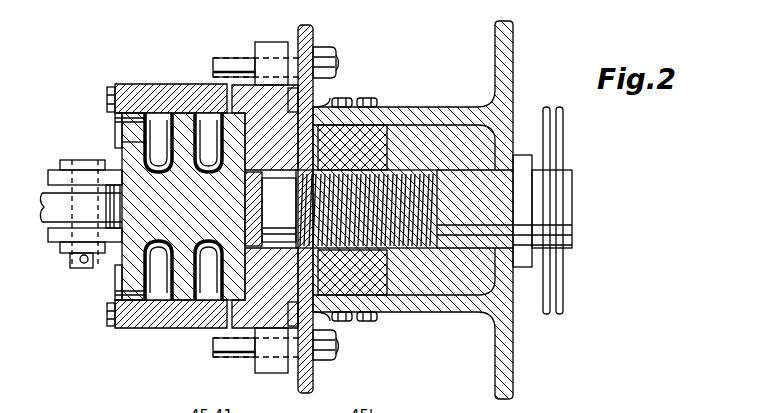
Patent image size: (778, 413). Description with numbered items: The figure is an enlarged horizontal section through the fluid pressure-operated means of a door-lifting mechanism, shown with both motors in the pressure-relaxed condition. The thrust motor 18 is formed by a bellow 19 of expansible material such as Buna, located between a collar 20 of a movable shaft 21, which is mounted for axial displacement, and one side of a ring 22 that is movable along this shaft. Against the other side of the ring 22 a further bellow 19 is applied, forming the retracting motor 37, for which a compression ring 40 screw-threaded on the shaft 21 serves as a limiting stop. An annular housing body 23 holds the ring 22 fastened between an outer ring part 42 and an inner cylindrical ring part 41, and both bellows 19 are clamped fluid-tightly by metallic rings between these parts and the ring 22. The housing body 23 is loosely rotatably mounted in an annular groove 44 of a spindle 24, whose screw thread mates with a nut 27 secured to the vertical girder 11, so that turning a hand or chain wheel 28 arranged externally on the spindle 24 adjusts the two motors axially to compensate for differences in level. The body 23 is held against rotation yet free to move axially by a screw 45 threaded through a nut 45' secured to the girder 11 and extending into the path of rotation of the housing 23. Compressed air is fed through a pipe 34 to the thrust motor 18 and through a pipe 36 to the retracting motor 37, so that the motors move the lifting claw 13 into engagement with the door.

The vertical girder 11 is at (486, 52).
The lifting claw 13 is at (53, 210).
The thrust motor 18 is at (122, 123).
The bellow 19 is at (147, 142).
The collar 20 is at (128, 272).
The movable shaft 21 is at (243, 200).
The ring 22 is at (182, 101).
The annular housing body 23 is at (300, 135).
The spindle 24 is at (425, 245).
The nut 27 is at (376, 144).
The chain wheel 28 is at (547, 112).
The pipe 34 is at (160, 86).
The pipe 36 is at (208, 85).
The retracting motor 37 is at (192, 285).
The compression ring 40 is at (228, 285).
The inner cylindrical ring part 41 is at (248, 100).
The outer ring part 42 is at (120, 90).
The annular groove 44 is at (283, 214).
The screw 45 is at (246, 194).
The nut 45' is at (338, 198).